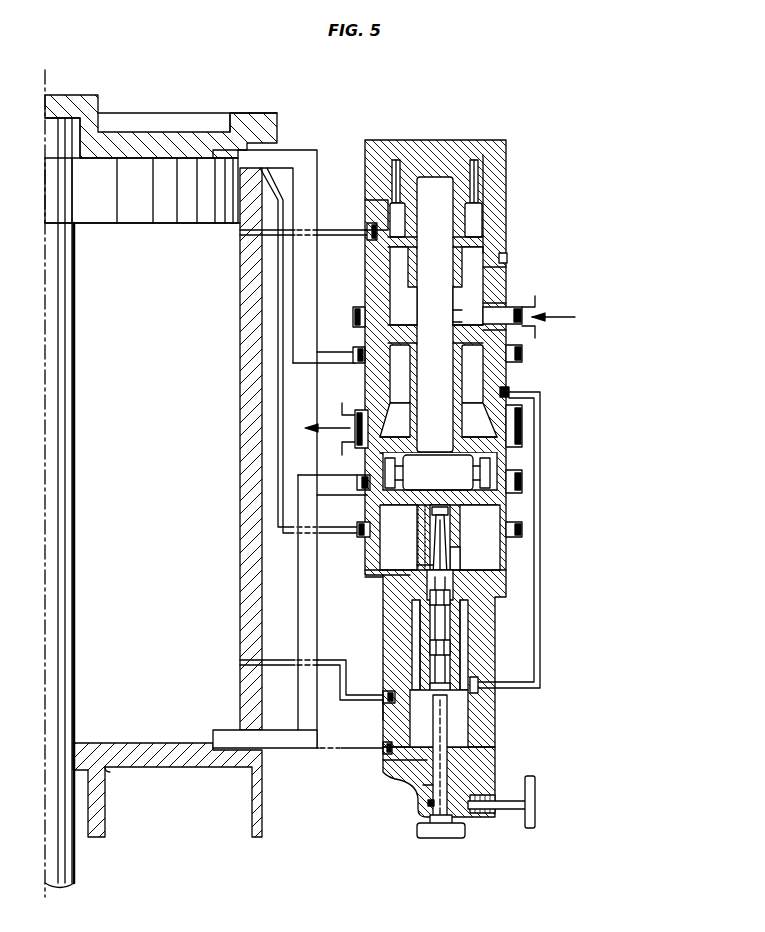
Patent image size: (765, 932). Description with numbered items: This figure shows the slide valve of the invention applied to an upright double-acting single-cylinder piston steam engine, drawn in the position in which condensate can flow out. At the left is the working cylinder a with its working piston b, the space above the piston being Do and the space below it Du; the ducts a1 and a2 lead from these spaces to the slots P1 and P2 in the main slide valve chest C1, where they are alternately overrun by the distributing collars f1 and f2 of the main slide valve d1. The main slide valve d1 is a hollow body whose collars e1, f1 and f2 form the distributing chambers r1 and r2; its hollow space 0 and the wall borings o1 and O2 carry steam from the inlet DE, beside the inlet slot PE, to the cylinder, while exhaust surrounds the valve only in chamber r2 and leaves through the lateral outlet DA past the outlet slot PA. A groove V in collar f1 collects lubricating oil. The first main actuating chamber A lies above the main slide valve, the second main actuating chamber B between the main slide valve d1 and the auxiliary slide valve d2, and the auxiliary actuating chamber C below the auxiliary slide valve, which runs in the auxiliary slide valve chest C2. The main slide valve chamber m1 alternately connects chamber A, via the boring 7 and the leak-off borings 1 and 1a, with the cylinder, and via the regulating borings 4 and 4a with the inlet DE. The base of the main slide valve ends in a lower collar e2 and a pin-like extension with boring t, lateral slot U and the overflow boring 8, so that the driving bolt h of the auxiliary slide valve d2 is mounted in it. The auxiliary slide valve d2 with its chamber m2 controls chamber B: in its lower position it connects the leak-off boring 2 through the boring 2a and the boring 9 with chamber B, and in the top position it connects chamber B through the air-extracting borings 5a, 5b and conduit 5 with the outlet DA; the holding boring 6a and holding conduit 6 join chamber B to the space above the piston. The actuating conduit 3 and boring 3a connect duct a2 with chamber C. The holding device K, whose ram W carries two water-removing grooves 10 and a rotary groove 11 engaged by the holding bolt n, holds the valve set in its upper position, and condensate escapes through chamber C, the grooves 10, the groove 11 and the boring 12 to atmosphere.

The upper cylinder space Do is at (168, 150).
The lower cylinder space Du is at (153, 530).
The working cylinder a is at (252, 312).
The duct a1 is at (300, 158).
The duct a2 is at (280, 750).
The working piston b is at (202, 212).
The leak-off boring 1 is at (340, 238).
The leak-off boring 1a is at (378, 207).
The leak-off boring 2 is at (279, 662).
The boring in auxiliary slide valve chest 2a is at (387, 715).
The actuating conduit 3 is at (352, 748).
The boring 3a is at (383, 767).
The fresh motive fluid regulating boring 4 is at (503, 272).
The fresh motive fluid regulating boring 4a is at (488, 247).
The air extracting conduit 5 is at (542, 447).
The air extracting boring 5a is at (470, 663).
The air extracting boring 5b is at (492, 381).
The holding conduit 6 is at (284, 380).
The motive fluid holding boring 6a is at (372, 512).
The boring in main slide valve 7 is at (417, 190).
The overflow boring 8 is at (417, 565).
The boring in auxiliary slide valve 9 is at (420, 593).
The water removing grooves 10 is at (468, 752).
The rotary groove 11 is at (423, 792).
The boring 12 is at (427, 808).
The first main actuating chamber A is at (483, 162).
The second main actuating chamber B is at (478, 555).
The auxiliary actuating chamber C is at (457, 733).
The main slide valve chest C1 is at (495, 217).
The lower cylinder bore C2 is at (473, 698).
The motive fluid inlet DE is at (529, 316).
The lateral outlet DA is at (336, 429).
The inlet port PE is at (495, 336).
The outlet slot PA is at (500, 426).
The slot P1 is at (495, 356).
The slot P2 is at (500, 482).
The main slide valve chamber m1 is at (477, 217).
The auxiliary slide valve chamber m2 is at (420, 632).
The collar e1 is at (487, 246).
The lower control edge e2 is at (500, 503).
The hollow space 0 is at (432, 281).
The boring o1 is at (460, 315).
The boring O2 is at (397, 475).
The distributing chamber r1 is at (468, 286).
The distributing chamber r2 is at (472, 374).
The groove V is at (403, 286).
The distributing collar f1 is at (457, 338).
The distributing collar f2 is at (458, 445).
The main slide valve d1 is at (457, 381).
The auxiliary slide valve d2 is at (453, 623).
The driving bolt h is at (440, 533).
The boring t is at (427, 545).
The lateral slot U is at (453, 567).
The valve spindle W is at (440, 720).
The holding device K is at (483, 780).
The holding bolt n is at (528, 808).